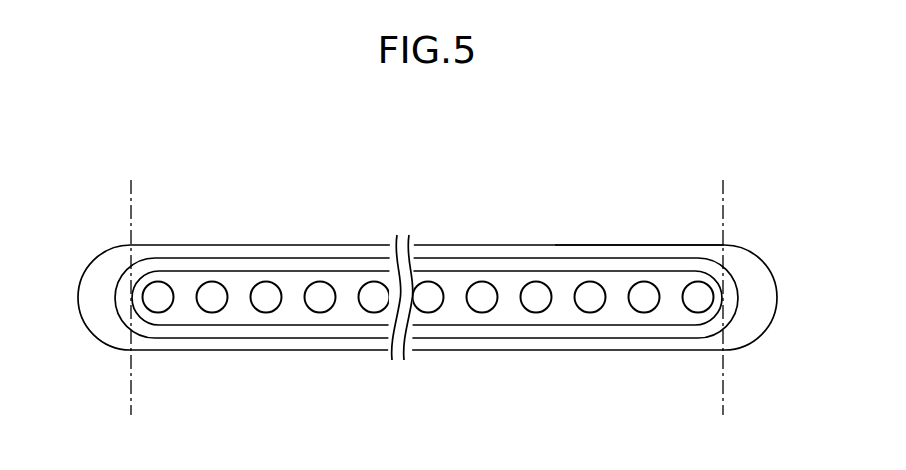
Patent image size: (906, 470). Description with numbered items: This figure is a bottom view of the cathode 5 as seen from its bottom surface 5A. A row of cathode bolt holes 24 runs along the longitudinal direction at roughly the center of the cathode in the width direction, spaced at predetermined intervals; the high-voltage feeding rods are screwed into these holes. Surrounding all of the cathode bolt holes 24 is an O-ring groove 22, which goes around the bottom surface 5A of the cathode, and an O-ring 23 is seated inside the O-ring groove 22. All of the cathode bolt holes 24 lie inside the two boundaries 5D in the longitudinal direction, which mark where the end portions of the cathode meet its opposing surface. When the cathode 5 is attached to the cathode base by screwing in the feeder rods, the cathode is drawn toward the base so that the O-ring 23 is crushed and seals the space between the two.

The cathode 5 is at (783, 228).
The bottom surface 5A is at (615, 250).
The boundaries 5D is at (133, 381).
The O-ring groove 22 is at (437, 258).
The O-ring 23 is at (347, 260).
The cathode bolt holes 24 is at (163, 289).